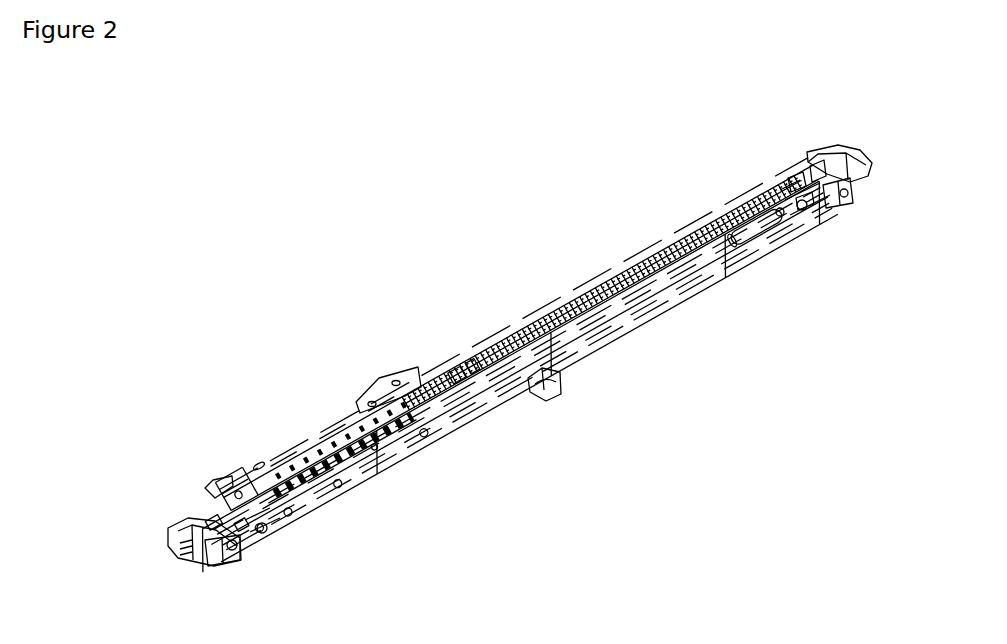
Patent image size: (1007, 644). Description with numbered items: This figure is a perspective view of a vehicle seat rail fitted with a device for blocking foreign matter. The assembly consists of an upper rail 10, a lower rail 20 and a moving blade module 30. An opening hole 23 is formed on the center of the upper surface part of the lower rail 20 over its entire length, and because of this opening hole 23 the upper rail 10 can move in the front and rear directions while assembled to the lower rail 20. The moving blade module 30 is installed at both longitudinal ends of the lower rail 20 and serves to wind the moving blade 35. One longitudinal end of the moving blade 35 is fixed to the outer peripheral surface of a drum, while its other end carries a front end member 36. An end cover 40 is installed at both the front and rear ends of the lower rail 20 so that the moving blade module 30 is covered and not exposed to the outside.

The upper rail 10 is at (250, 456).
The lower rail 20 is at (375, 475).
The opening hole 23 is at (205, 515).
The moving blade module 30 is at (212, 563).
The moving blade 35 is at (523, 323).
The front end member 36 is at (211, 495).
The end cover 40 is at (183, 526).